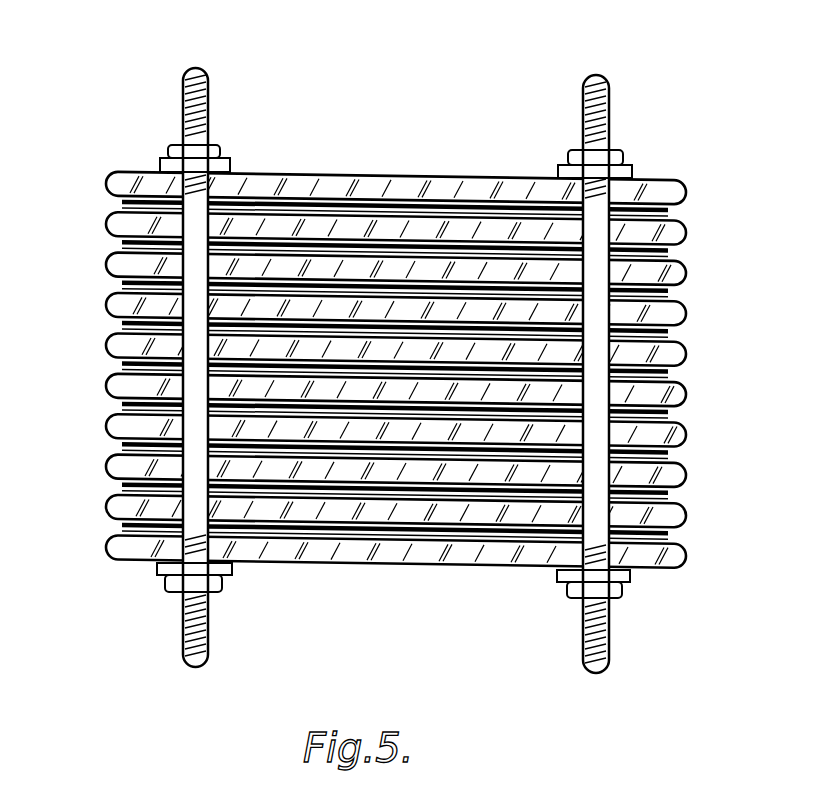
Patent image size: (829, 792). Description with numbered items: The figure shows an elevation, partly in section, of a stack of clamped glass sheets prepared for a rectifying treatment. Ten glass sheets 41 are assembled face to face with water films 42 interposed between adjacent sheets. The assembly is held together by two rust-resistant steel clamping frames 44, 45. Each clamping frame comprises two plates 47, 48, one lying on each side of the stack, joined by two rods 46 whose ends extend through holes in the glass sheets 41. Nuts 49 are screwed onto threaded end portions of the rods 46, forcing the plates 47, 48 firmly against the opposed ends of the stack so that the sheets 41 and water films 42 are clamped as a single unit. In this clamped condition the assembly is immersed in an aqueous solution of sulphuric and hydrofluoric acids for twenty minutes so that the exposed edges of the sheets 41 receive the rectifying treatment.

The glass sheets 41 is at (107, 338).
The water films 42 is at (678, 336).
The clamping frame 44 is at (614, 126).
The clamping frame 45 is at (177, 104).
The rods 46 is at (192, 432).
The plate 47 is at (555, 582).
The plate 48 is at (158, 160).
The nuts 49 is at (562, 158).